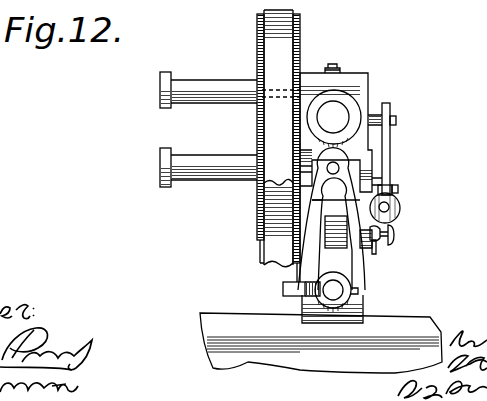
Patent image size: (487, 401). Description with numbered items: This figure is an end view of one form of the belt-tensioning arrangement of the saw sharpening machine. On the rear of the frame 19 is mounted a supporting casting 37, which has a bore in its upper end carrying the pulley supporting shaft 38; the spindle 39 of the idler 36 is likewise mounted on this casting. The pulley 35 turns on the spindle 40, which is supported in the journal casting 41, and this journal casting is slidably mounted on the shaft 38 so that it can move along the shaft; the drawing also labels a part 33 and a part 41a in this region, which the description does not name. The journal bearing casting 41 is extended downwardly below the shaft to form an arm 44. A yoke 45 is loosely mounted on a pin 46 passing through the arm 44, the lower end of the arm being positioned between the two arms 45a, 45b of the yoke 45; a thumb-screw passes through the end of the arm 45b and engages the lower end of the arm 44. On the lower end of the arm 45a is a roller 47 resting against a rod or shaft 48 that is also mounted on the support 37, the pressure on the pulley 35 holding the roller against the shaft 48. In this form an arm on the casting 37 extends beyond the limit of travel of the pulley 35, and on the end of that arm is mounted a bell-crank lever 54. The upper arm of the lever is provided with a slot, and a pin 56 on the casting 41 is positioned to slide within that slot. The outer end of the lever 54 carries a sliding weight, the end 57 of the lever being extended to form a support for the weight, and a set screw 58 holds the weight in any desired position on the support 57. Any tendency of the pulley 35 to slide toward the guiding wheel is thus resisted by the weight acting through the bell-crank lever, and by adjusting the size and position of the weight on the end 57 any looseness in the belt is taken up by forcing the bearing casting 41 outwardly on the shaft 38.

The frame 19 is at (330, 352).
The shaft section 33 is at (275, 171).
The pulley 35 is at (257, 28).
The idler 36 is at (258, 218).
The supporting casting 37 is at (352, 283).
The pulley supporting shaft 38 is at (365, 104).
The spindle of the idler 39 is at (212, 159).
The spindle 40 is at (242, 90).
The journal casting 41 is at (338, 113).
The set screw 41a is at (312, 78).
The arm 44 is at (337, 209).
The yoke 45 is at (340, 167).
The arm of the yoke 45a is at (286, 264).
The arm of the yoke 45b is at (343, 247).
The pin 46 is at (343, 152).
The roller 47 is at (288, 291).
The rod or shaft 48 is at (344, 296).
The bell-crank lever 54 is at (386, 149).
The pin 56 is at (397, 120).
The end of the lever 57 is at (387, 209).
The set screw 58 is at (386, 189).